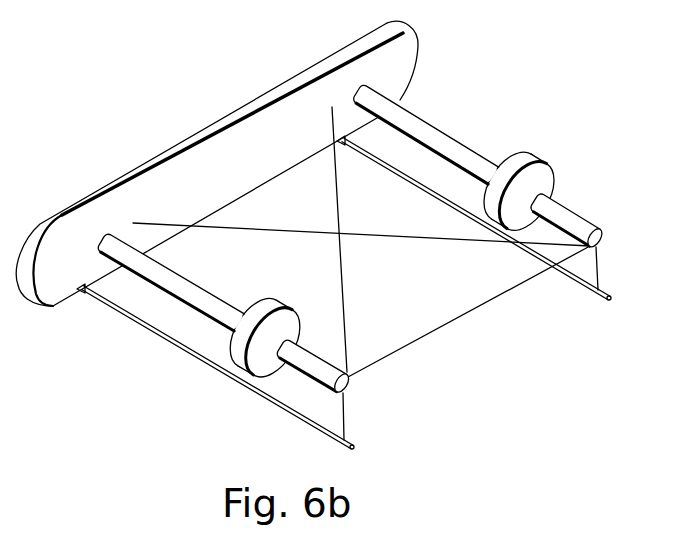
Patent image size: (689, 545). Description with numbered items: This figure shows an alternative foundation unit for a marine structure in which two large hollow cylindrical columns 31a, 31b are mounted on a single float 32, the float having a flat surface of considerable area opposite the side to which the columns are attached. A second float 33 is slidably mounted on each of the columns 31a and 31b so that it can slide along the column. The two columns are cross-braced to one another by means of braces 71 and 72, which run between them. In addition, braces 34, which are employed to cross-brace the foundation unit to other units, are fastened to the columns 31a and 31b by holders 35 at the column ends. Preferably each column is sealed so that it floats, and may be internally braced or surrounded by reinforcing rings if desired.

The float 32 is at (407, 63).
The column 31a is at (435, 128).
The column 31b is at (203, 290).
The float 33 is at (537, 160).
The brace 34 is at (560, 274).
The holder 35 is at (598, 270).
The brace 71 is at (423, 240).
The brace 72 is at (408, 343).